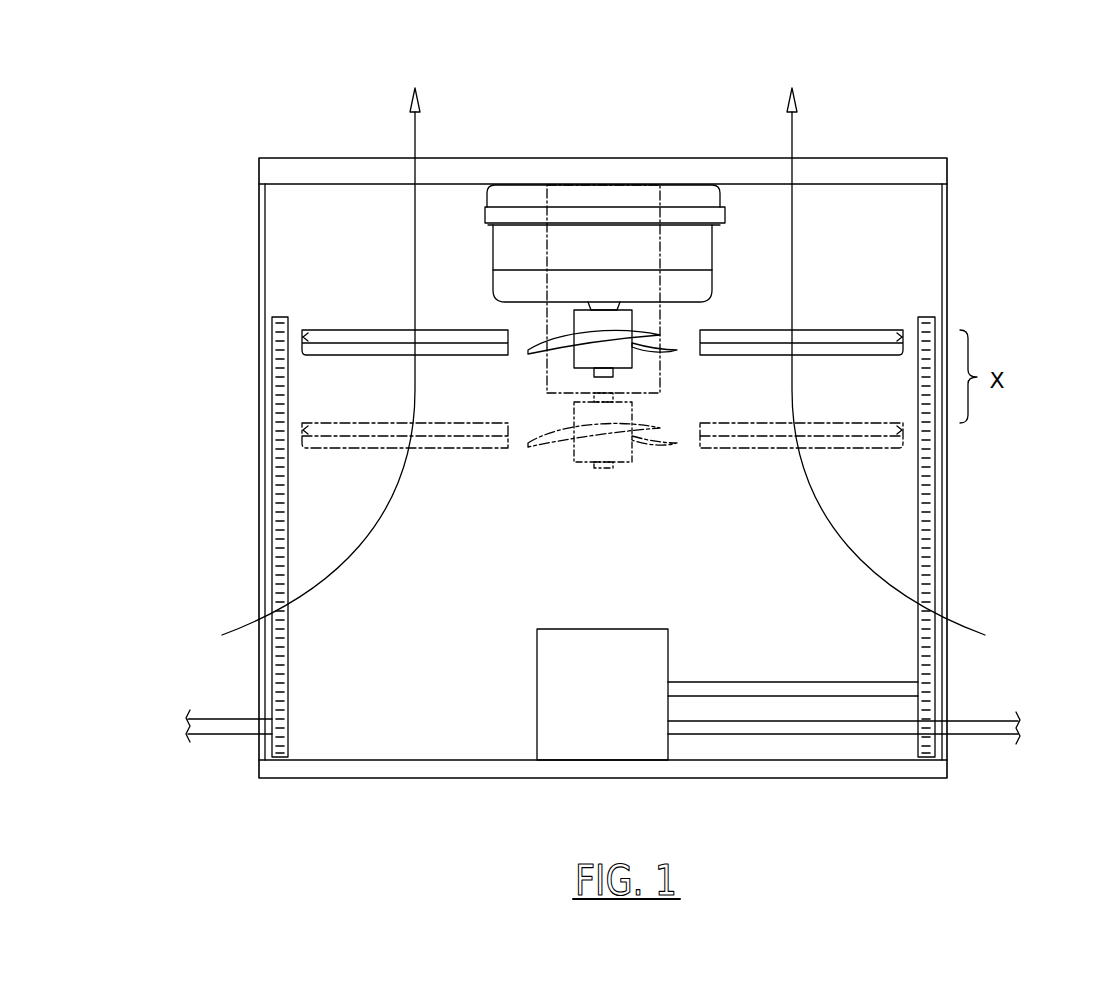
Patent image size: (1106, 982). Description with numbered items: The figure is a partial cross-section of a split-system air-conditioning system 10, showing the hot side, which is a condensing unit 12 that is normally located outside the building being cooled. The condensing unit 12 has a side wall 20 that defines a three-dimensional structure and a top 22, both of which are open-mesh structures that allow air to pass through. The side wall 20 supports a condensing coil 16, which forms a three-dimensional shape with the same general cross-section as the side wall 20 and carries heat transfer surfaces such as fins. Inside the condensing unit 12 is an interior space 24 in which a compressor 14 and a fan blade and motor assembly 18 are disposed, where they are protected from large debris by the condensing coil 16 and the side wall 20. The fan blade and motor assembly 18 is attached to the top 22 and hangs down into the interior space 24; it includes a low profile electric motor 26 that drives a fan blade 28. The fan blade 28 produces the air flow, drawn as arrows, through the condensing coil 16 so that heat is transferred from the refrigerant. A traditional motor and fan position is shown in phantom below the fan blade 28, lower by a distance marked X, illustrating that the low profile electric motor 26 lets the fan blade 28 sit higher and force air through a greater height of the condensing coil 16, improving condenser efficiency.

The air-conditioning system 10 is at (995, 117).
The condensing unit 12 is at (319, 158).
The compressor 14 is at (593, 629).
The condensing coil 16 is at (272, 528).
The fan blade and motor assembly 18 is at (485, 253).
The side wall 20 is at (259, 240).
The top 22 is at (858, 158).
The interior space 24 is at (767, 221).
The low profile electric motor 26 is at (518, 198).
The fan blade 28 is at (343, 329).